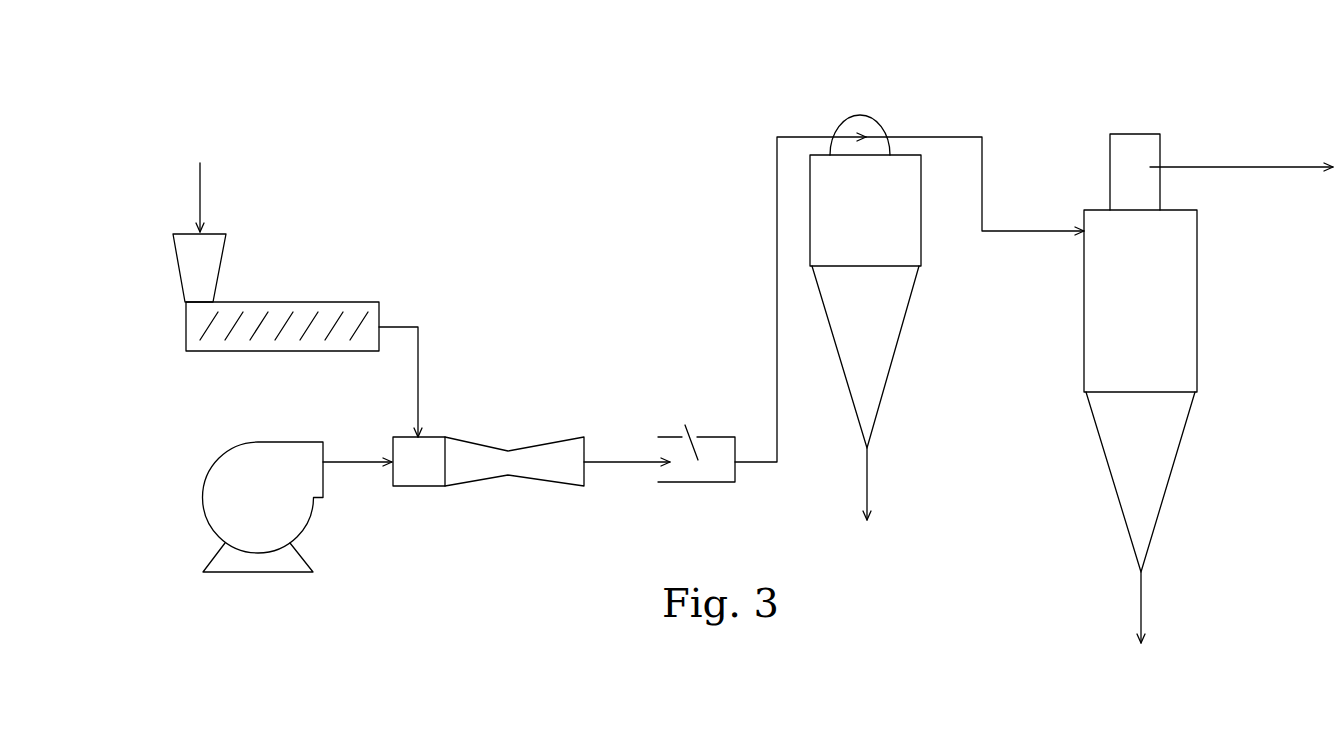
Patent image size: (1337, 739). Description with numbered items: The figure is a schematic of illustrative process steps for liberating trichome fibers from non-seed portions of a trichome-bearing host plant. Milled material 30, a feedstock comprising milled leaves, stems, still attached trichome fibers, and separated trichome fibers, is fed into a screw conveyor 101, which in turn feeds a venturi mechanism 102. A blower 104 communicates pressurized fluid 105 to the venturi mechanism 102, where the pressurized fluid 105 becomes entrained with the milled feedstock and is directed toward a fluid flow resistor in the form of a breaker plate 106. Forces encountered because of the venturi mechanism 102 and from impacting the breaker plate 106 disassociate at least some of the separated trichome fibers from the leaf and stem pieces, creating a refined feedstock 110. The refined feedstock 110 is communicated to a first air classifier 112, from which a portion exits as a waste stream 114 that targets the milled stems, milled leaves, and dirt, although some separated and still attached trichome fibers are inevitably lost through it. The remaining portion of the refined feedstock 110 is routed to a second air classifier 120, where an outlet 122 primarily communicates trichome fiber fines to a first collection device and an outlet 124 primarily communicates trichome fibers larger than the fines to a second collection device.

The material 30 is at (200, 202).
The screw conveyor 101 is at (352, 302).
The venturi mechanism 102 is at (498, 433).
The blower 104 is at (178, 510).
The pressurized fluid 105 is at (355, 462).
The breaker plate 106 is at (698, 418).
The refined feedstock 110 is at (777, 282).
The first air classifier 112 is at (898, 100).
The waste stream 114 is at (867, 484).
The second air classifier 120 is at (1077, 122).
The outlet 122 is at (1185, 167).
The outlet 124 is at (1141, 606).